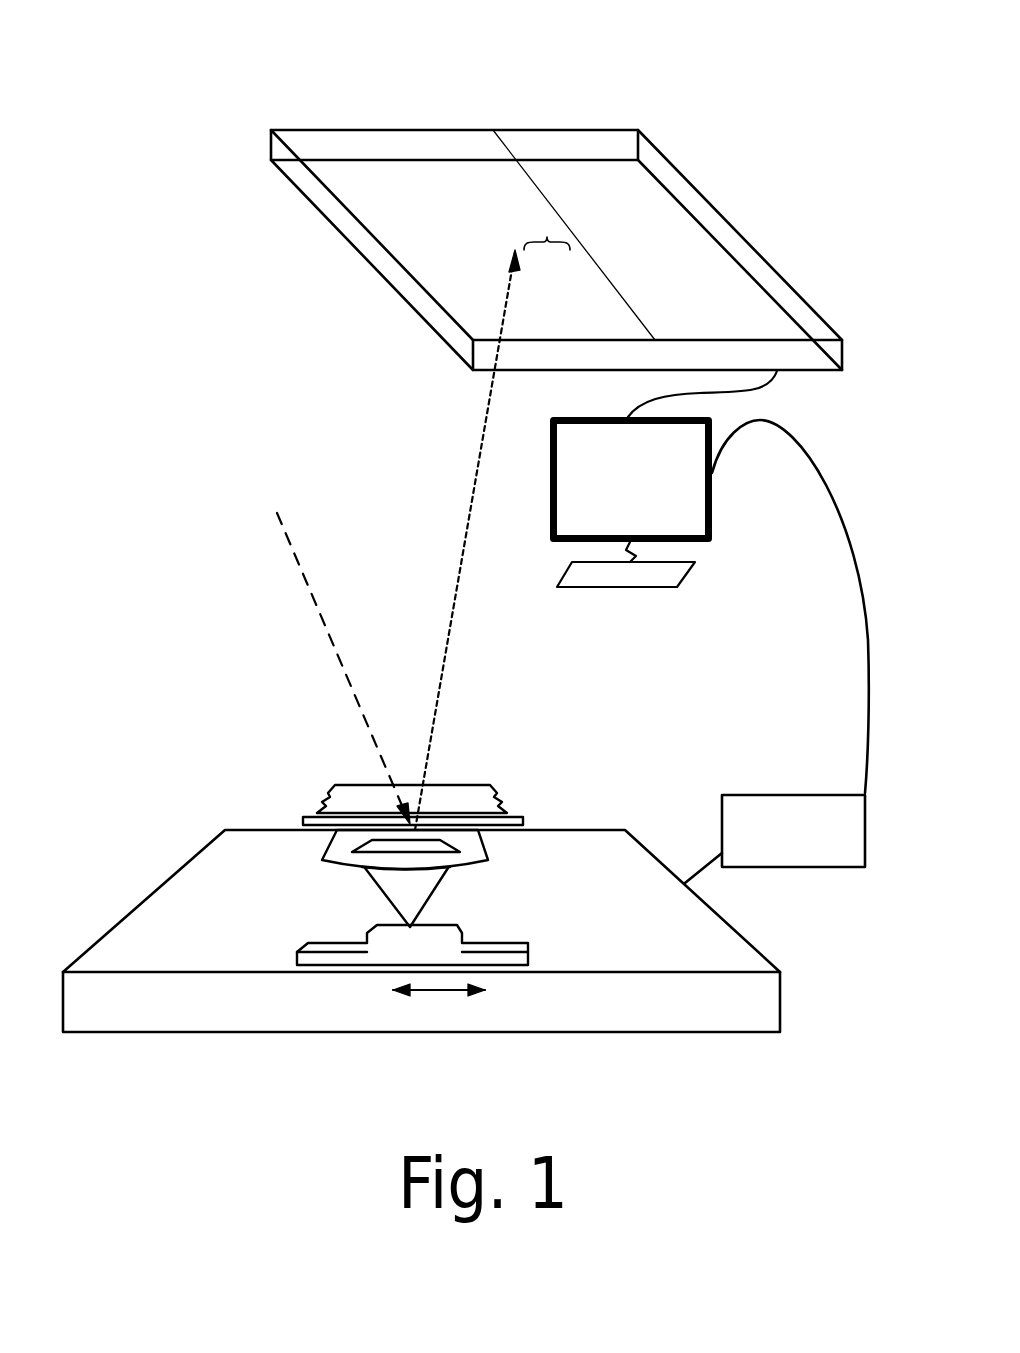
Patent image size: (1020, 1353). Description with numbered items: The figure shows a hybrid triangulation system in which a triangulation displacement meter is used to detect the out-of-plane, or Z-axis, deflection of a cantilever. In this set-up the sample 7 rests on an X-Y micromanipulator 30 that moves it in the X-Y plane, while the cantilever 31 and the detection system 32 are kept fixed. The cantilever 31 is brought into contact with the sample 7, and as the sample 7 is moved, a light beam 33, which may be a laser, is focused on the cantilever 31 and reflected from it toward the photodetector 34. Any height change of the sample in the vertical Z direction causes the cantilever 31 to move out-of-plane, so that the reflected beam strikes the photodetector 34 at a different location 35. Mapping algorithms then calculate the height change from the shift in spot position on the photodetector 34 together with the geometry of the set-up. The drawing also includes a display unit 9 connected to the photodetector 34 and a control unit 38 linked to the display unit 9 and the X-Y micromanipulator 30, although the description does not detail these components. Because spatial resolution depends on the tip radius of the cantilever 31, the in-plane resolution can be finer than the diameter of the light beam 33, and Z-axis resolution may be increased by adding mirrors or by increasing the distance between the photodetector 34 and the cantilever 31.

The sample 7 is at (412, 942).
The computer 9 is at (712, 543).
The X-Y micromanipulator 30 is at (497, 1005).
The cantilever 31 is at (400, 890).
The detection system 32 is at (158, 305).
The light beam 33 is at (321, 641).
The photodetector 34 is at (305, 203).
The location 35 is at (517, 192).
The controller 38 is at (823, 870).